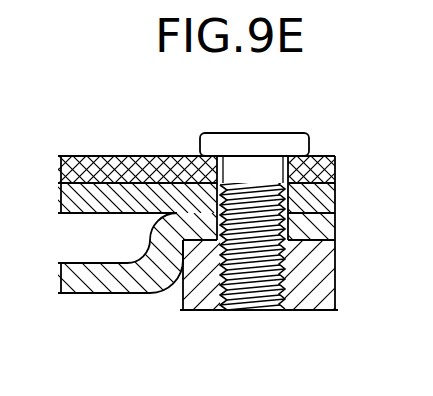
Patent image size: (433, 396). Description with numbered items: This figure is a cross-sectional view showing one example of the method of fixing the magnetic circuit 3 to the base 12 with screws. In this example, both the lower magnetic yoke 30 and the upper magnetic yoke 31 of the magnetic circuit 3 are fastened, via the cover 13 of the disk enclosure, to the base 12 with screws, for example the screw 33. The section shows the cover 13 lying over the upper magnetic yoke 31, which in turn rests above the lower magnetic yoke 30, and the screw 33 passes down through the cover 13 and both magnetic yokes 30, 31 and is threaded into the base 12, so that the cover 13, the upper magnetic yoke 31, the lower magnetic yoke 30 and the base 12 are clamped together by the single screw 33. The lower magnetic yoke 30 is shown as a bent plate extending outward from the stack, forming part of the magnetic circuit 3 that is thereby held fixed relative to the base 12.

The magnetic circuit 3 is at (108, 300).
The base 12 is at (323, 282).
The cover 13 is at (337, 172).
The lower magnetic yoke 30 is at (323, 230).
The upper magnetic yoke 31 is at (337, 200).
The screw 33 is at (270, 143).